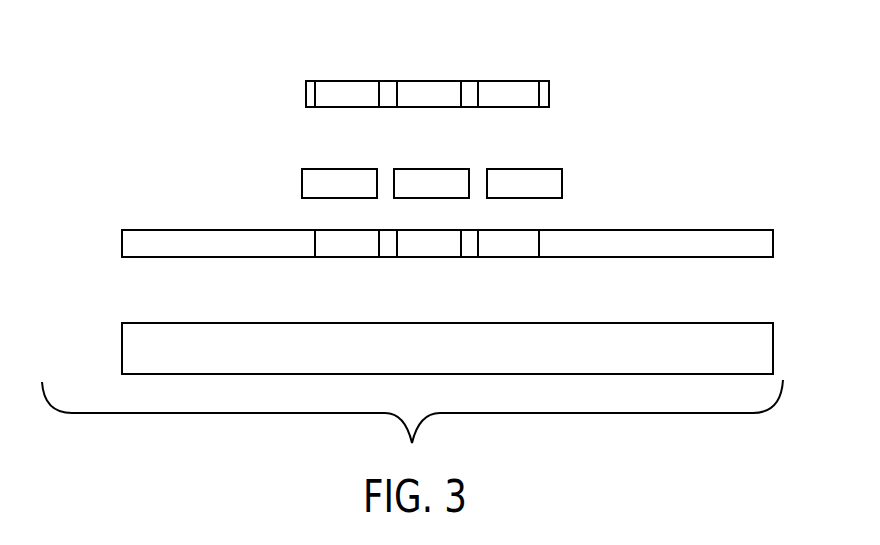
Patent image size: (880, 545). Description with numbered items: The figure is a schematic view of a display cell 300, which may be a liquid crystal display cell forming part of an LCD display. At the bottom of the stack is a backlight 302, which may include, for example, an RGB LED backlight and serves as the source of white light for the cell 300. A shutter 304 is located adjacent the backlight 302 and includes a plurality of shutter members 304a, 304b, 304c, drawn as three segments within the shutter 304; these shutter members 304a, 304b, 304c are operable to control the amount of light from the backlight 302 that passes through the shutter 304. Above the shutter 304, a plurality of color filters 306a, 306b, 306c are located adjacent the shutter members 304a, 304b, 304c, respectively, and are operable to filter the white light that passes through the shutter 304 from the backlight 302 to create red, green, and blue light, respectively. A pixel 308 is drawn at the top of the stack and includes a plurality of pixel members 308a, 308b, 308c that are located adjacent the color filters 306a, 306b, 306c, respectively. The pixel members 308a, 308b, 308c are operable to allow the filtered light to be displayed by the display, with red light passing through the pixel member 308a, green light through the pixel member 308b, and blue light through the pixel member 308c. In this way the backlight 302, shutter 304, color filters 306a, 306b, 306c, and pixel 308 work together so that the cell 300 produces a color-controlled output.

The cell 300 is at (649, 65).
The backlight 302 is at (110, 342).
The shutter 304 is at (110, 236).
The shutter member 304a is at (356, 242).
The shutter member 304b is at (440, 242).
The shutter member 304c is at (523, 242).
The color filter 306a is at (342, 168).
The color filter 306b is at (433, 168).
The color filter 306c is at (525, 168).
The pixel 308 is at (296, 90).
The pixel member 308a is at (355, 93).
The pixel member 308b is at (436, 93).
The pixel member 308c is at (518, 93).